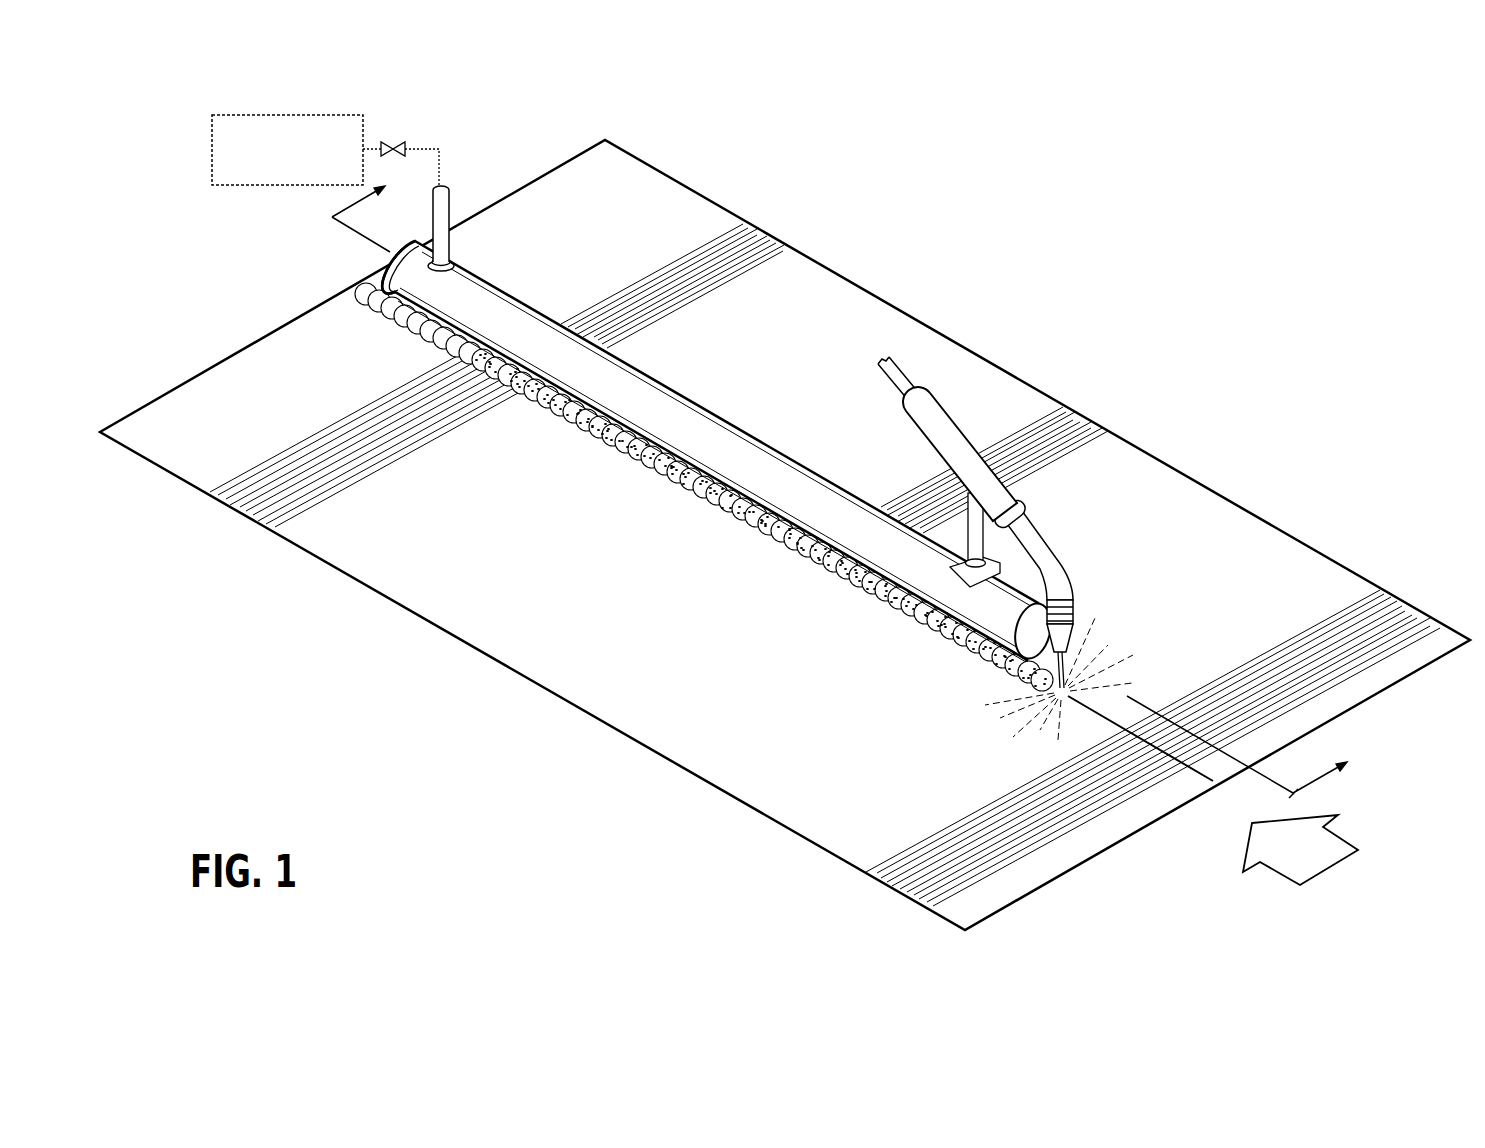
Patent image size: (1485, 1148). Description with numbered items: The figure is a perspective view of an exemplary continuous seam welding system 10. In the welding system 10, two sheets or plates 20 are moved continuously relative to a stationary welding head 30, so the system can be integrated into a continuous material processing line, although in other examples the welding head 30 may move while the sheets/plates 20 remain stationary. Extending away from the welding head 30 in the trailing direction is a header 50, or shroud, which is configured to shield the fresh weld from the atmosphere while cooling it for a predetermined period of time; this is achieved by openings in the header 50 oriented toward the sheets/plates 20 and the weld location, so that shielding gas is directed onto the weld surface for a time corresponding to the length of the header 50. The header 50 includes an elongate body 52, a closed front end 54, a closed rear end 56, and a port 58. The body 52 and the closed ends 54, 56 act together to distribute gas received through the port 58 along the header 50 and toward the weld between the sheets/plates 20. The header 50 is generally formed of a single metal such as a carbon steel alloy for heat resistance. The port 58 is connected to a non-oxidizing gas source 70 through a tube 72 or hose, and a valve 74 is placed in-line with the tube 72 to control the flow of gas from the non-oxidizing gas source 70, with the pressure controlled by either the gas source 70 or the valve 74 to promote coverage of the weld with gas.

The continuous seam welding system 10 is at (785, 498).
The sheets/plates 20 is at (808, 312).
The welding head 30 is at (1052, 546).
The header 50 is at (669, 451).
The elongate body 52 is at (667, 385).
The closed front end 54 is at (1020, 662).
The closed rear end 56 is at (388, 256).
The port 58 is at (453, 258).
The non-oxidizing gas source 70 is at (224, 185).
The tube 72 is at (456, 210).
The valve 74 is at (400, 116).